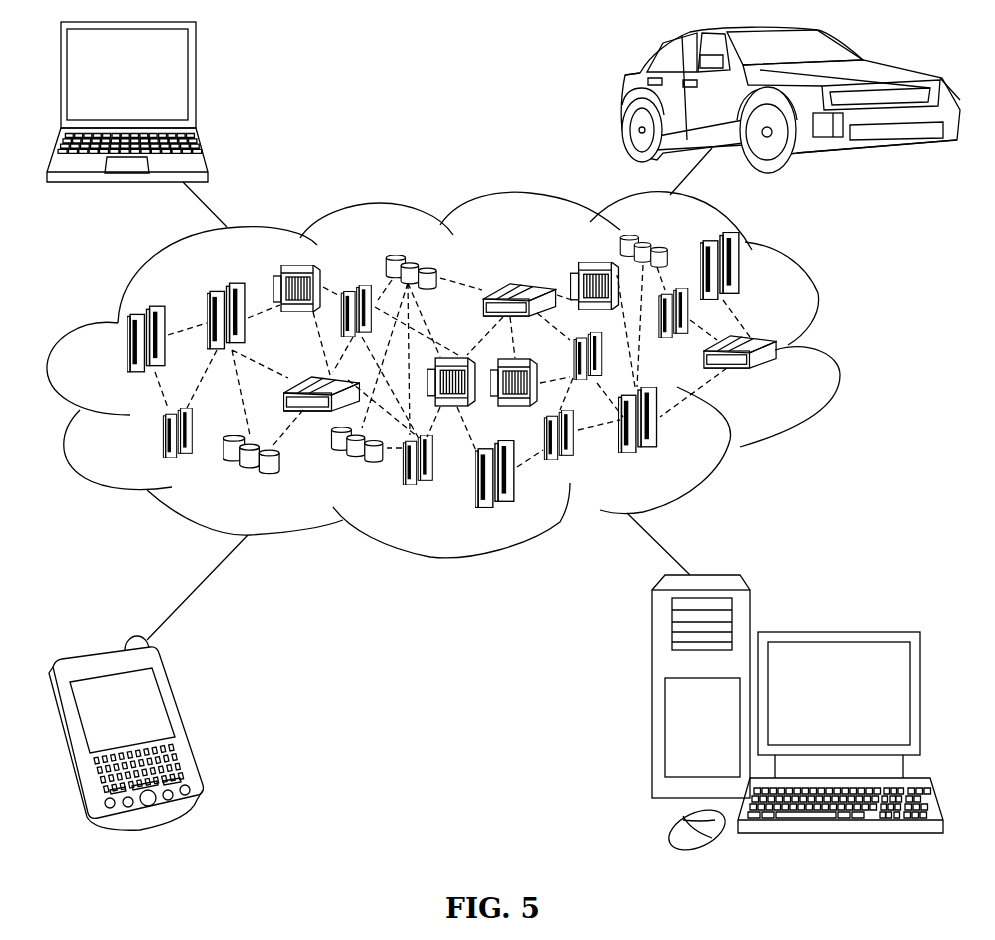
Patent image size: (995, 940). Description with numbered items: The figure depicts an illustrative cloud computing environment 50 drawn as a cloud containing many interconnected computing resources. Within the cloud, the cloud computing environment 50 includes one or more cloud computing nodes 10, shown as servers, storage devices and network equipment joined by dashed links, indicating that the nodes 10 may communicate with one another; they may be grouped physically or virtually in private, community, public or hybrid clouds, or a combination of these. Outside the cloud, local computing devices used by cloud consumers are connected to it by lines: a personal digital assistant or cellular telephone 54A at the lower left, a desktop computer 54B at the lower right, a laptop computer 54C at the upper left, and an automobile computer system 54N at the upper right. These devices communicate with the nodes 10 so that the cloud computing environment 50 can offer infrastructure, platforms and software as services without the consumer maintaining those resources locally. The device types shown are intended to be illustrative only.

The cloud computing node 10 is at (780, 378).
The cloud computing environment 50 is at (837, 352).
The personal digital assistant or cellular telephone 54A is at (185, 722).
The desktop computer 54B is at (840, 631).
The laptop computer 54C is at (197, 82).
The automobile computer system 54N is at (622, 98).